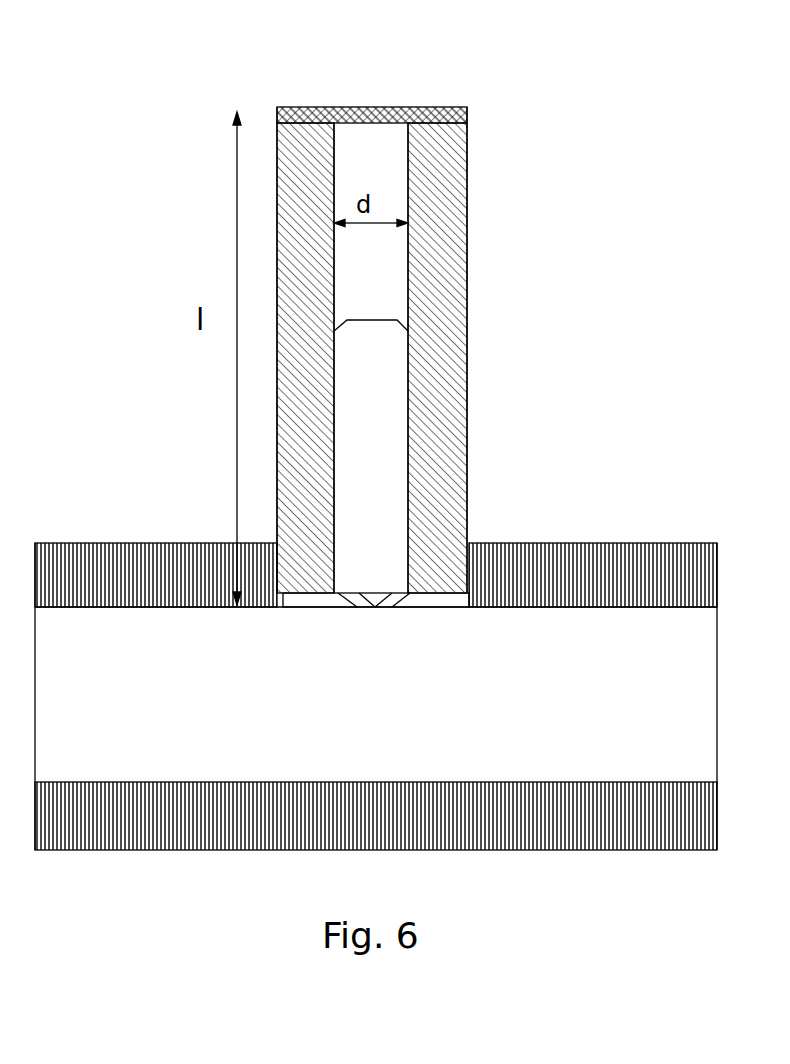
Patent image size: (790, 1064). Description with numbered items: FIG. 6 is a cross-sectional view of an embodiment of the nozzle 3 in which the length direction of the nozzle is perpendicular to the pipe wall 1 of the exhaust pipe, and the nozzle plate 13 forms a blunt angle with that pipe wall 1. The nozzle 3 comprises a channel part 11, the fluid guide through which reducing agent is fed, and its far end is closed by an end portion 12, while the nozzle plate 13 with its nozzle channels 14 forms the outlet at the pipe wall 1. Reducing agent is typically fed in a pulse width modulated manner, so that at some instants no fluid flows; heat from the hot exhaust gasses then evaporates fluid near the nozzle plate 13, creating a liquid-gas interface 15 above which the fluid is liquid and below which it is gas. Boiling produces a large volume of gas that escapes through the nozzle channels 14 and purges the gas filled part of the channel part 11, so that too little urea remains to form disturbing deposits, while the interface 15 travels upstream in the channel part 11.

The substrate 1 is at (101, 619).
The nozzle 3 is at (531, 356).
The channel part 11 is at (484, 263).
The closed tip / cap layer 12 is at (412, 88).
The nozzle plate 13 is at (448, 627).
The nozzle channels 14 is at (384, 626).
The liquid-gas interface 15 is at (402, 349).